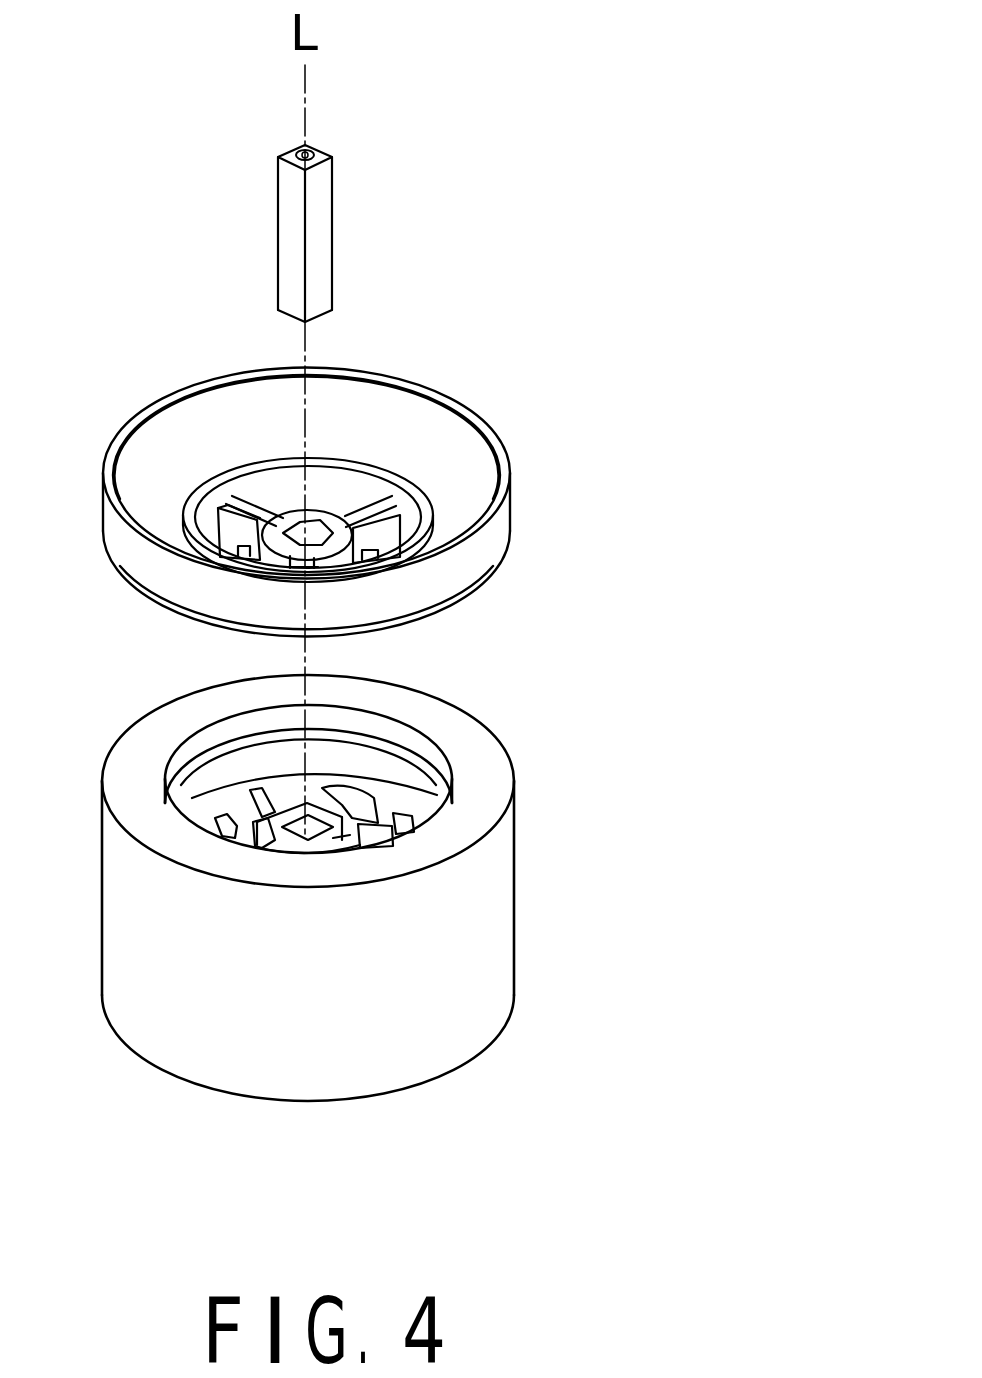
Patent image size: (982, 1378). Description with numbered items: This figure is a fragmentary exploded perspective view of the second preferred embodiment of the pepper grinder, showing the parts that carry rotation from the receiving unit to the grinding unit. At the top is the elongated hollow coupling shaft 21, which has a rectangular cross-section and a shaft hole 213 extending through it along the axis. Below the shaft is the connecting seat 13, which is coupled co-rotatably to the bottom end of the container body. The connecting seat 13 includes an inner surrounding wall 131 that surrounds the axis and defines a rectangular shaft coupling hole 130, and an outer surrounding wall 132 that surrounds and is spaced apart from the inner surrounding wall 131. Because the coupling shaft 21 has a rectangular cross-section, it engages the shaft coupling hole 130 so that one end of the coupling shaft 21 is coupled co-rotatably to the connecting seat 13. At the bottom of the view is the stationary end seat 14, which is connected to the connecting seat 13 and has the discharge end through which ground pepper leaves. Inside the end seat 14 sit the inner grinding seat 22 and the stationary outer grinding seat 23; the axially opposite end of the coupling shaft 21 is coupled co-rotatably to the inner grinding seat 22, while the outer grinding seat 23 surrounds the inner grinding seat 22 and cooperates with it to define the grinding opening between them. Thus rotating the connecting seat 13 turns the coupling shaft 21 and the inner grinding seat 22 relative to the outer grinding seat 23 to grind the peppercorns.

The connecting seat 13 is at (419, 461).
The shaft coupling hole 130 is at (330, 521).
The inner surrounding wall 131 is at (322, 518).
The outer surrounding wall 132 is at (493, 537).
The end seat 14 is at (396, 857).
The coupling shaft 21 is at (389, 198).
The shaft hole 213 is at (313, 148).
The inner grinding seat 22 is at (435, 733).
The outer grinding seat 23 is at (348, 800).